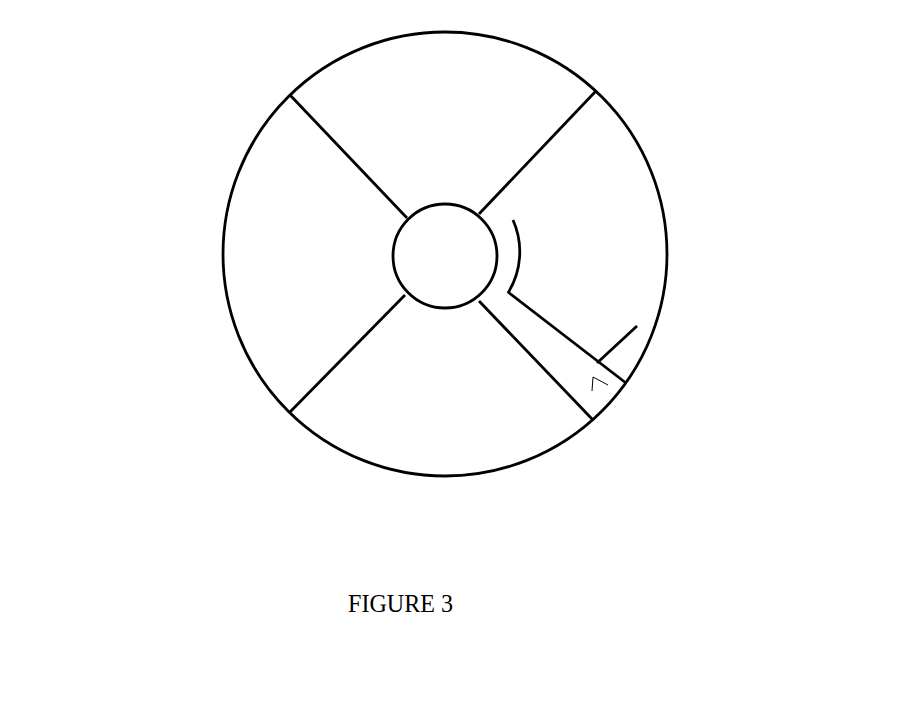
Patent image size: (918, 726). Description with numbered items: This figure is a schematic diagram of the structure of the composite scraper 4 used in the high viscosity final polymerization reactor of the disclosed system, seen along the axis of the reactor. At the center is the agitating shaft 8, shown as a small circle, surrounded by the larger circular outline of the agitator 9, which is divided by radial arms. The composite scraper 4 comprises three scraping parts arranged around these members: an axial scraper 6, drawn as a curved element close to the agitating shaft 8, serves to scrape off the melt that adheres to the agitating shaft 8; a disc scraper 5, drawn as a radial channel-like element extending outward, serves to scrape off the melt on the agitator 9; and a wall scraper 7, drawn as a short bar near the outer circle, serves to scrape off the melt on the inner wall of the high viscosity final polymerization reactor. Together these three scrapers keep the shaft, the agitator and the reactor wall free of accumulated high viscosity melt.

The composite scraper 4 is at (593, 377).
The disc scraper 5 is at (550, 320).
The axial scraper 6 is at (532, 243).
The wall scraper 7 is at (625, 350).
The agitating shaft 8 is at (423, 263).
The agitator 9 is at (280, 178).